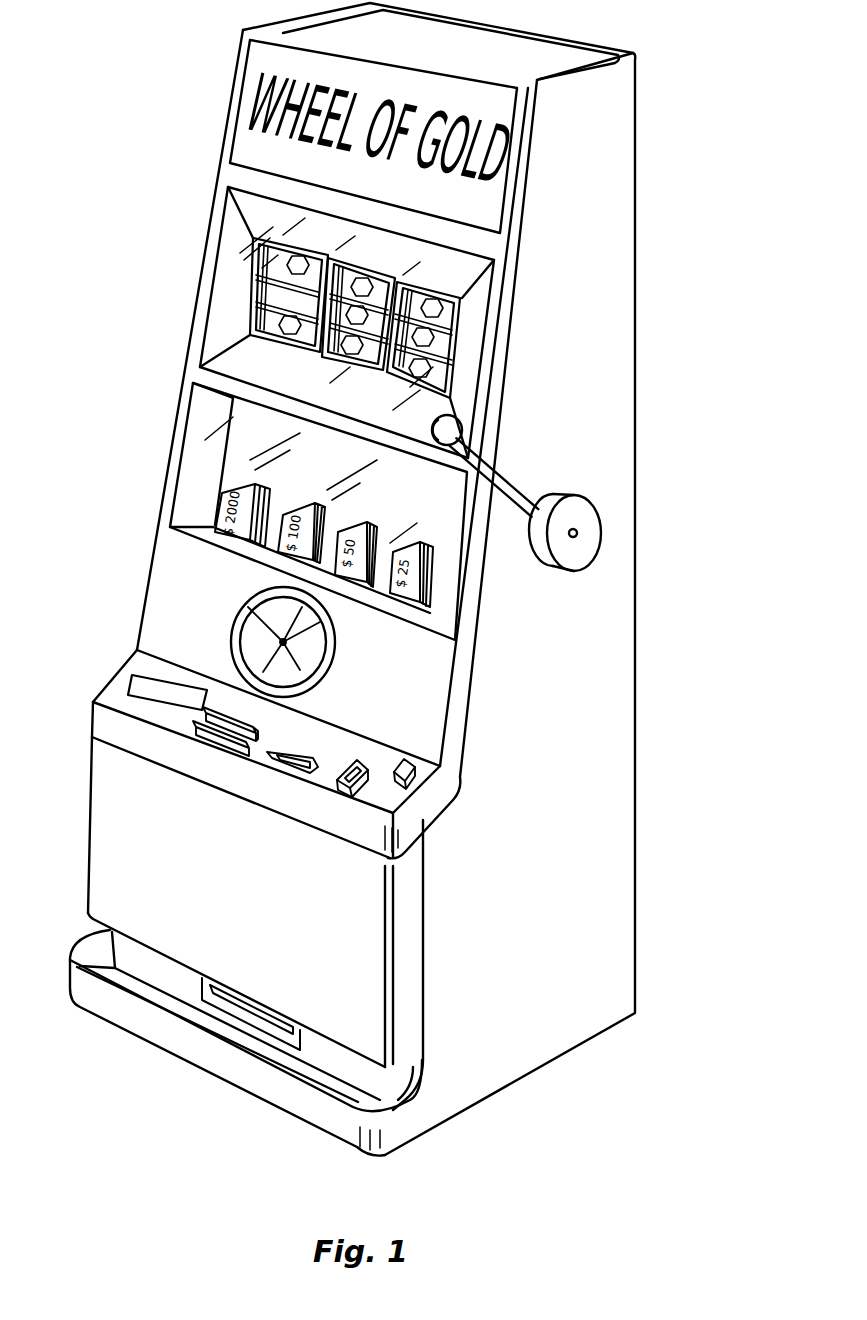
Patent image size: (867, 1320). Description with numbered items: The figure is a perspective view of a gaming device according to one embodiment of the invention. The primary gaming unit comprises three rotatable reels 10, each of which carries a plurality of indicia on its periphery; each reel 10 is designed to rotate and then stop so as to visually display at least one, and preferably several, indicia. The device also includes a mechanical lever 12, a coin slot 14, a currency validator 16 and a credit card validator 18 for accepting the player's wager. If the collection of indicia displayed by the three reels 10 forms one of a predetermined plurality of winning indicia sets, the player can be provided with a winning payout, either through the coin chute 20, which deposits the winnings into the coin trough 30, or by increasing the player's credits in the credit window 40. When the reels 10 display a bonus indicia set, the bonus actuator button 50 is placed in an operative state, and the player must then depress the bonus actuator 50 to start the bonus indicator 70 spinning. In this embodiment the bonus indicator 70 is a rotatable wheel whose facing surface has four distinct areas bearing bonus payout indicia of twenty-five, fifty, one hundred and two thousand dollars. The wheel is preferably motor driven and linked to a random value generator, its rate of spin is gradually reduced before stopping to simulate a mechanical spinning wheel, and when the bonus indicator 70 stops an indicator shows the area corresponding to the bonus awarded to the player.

The rotatable reels 10 is at (273, 287).
The mechanical lever 12 is at (507, 470).
The coin slot 14 is at (355, 793).
The currency validator 16 is at (290, 765).
The credit card validator 18 is at (207, 735).
The coin chute 20 is at (263, 1022).
The coin trough 30 is at (143, 985).
The credit window 40 is at (134, 670).
The bonus actuator button 50 is at (420, 762).
The bonus indicator 70 is at (333, 645).